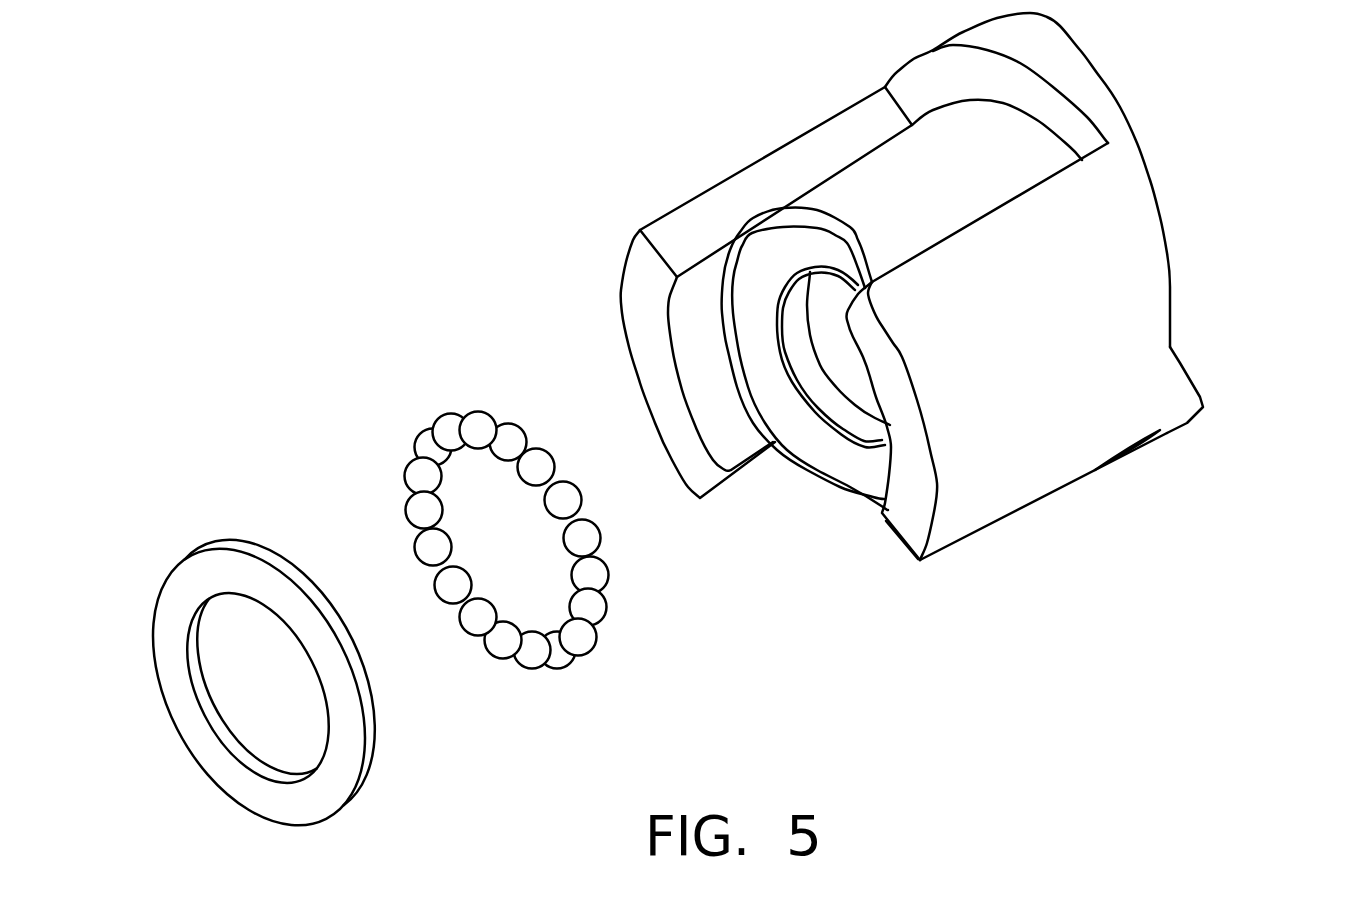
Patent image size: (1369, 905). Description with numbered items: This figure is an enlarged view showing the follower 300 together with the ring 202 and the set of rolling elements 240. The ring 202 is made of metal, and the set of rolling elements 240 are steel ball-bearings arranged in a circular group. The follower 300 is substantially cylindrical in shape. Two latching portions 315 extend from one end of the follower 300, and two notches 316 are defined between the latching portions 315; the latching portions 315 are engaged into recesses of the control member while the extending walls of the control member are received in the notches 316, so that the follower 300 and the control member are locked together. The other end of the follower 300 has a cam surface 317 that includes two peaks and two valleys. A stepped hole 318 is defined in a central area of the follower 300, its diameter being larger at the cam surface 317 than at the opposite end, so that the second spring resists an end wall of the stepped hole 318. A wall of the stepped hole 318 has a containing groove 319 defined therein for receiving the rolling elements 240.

The ring 202 is at (210, 577).
The set of rolling elements 240 is at (478, 427).
The follower 300 is at (706, 161).
The latching portions 315 is at (685, 317).
The notches 316 is at (860, 185).
The cam surface 317 is at (1170, 318).
The stepped hole 318 is at (847, 368).
The containing groove 319 is at (860, 463).